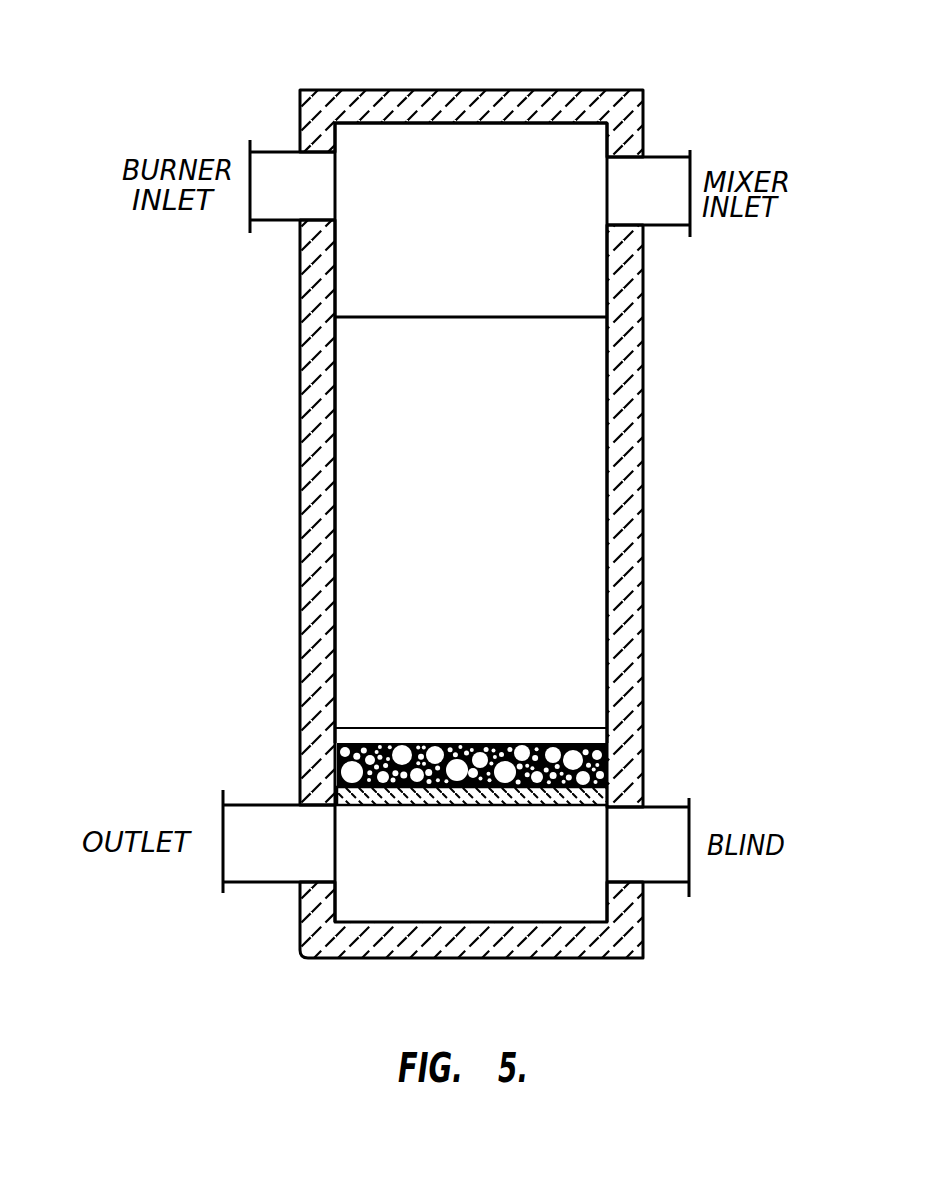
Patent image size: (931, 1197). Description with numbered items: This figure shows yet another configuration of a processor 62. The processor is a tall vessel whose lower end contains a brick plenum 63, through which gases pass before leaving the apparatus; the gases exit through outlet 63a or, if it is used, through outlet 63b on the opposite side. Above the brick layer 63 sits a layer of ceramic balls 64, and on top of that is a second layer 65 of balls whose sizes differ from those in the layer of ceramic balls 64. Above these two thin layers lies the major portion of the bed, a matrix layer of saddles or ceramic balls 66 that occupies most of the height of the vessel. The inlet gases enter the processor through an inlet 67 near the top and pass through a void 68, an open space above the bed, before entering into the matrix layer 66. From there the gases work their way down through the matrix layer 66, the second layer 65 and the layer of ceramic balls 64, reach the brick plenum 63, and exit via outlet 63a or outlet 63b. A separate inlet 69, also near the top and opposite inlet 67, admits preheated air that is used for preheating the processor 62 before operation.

The processor 62 is at (495, 57).
The brick plenum 63 is at (478, 880).
The outlet 63a is at (272, 802).
The outlet 63b is at (662, 807).
The layer of ceramic balls 64 is at (600, 772).
The second layer of balls 65 is at (573, 737).
The bed of saddles or ceramic balls 66 is at (480, 637).
The inlet 67 is at (662, 154).
The void 68 is at (486, 225).
The inlet 69 is at (284, 150).